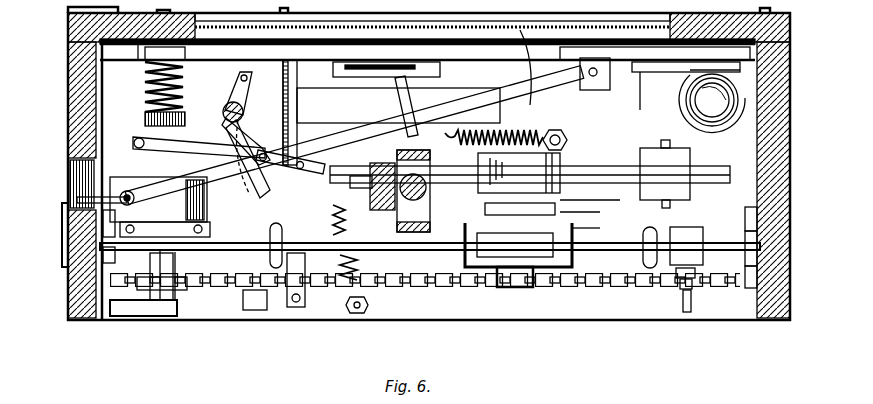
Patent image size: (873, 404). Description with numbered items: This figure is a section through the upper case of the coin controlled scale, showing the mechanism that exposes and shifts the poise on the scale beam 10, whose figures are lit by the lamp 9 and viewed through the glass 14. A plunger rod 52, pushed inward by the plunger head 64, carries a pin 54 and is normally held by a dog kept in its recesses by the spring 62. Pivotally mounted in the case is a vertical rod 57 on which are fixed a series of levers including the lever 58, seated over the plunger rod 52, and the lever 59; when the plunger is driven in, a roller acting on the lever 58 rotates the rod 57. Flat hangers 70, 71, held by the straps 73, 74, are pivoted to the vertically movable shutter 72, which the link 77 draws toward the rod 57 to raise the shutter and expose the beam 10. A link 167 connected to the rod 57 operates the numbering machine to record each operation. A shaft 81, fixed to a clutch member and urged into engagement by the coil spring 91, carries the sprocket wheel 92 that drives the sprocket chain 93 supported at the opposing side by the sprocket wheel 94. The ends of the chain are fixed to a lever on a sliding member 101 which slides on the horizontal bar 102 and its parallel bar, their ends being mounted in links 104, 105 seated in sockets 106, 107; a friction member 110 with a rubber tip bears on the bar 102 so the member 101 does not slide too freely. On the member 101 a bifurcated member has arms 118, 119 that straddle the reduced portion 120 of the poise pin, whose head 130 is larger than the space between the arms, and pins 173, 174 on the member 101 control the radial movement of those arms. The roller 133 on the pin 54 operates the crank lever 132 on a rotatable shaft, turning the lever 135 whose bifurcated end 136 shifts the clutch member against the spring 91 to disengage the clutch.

The lamp 9 is at (716, 117).
The scale beam 10 is at (568, 198).
The glass 14 is at (555, 88).
The plunger rod 52 is at (305, 300).
The pin 54 is at (276, 268).
The vertical rod 57 is at (256, 196).
The lever 58 is at (335, 108).
The lever 59 is at (291, 80).
The spring 62 is at (372, 262).
The plunger head 64 is at (294, 387).
The hanger 70 is at (706, 120).
The hanger 71 is at (440, 72).
The shutter 72 is at (518, 30).
The strap 73 is at (665, 118).
The strap 74 is at (372, 85).
The link 77 is at (565, 92).
The shaft 81 is at (160, 265).
The coil spring 91 is at (145, 77).
The sprocket wheel 92 is at (158, 300).
The sprocket chain 93 is at (480, 290).
The sprocket wheel 94 is at (676, 295).
The sliding member 101 is at (575, 232).
The horizontal bar 102 is at (614, 255).
The link 104 is at (745, 240).
The link 105 is at (100, 250).
The socket 106 is at (752, 290).
The socket 107 is at (104, 320).
The friction member 110 is at (520, 290).
The arm 118 is at (568, 213).
The arm 119 is at (490, 203).
The reduced portion 120 is at (574, 190).
The head 130 is at (548, 172).
The crank lever 132 is at (225, 240).
The roller 133 is at (333, 212).
The lever 135 is at (225, 133).
The bifurcated end 136 is at (150, 138).
The link 167 is at (180, 260).
The pin 173 is at (658, 183).
The pin 174 is at (476, 222).